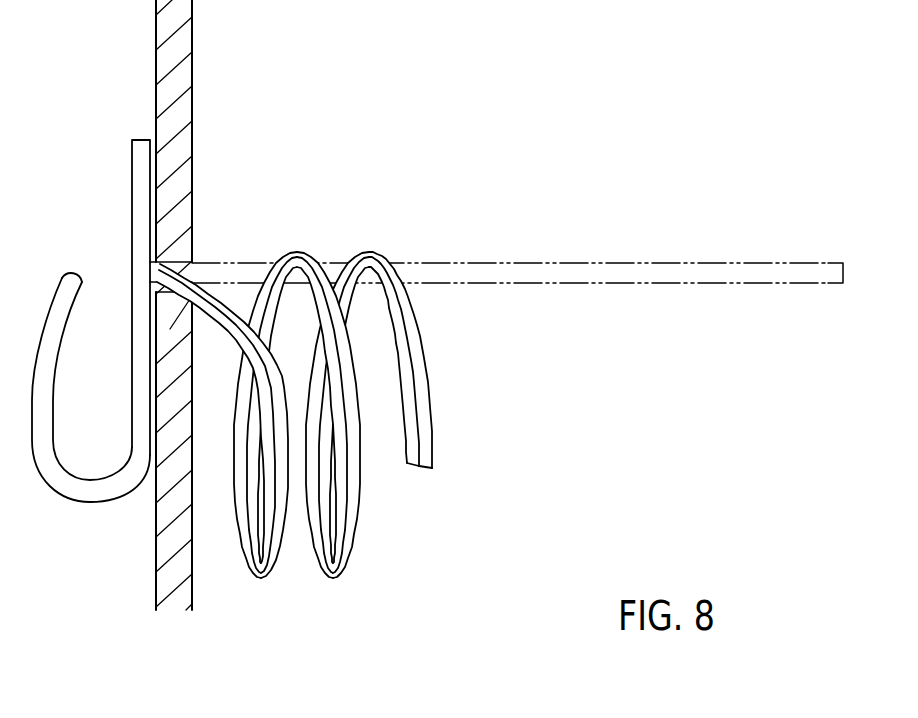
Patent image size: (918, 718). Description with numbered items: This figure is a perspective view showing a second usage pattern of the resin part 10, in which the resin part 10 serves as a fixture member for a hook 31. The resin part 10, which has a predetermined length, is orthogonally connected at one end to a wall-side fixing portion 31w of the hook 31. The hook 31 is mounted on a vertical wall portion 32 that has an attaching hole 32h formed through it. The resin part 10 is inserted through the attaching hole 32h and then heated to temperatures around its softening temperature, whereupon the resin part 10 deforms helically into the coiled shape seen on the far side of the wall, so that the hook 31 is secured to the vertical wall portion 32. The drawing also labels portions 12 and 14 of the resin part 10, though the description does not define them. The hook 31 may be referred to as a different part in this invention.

The resin part 10 is at (500, 379).
The core wire 12 is at (410, 405).
The outer coating layer 14 is at (418, 345).
The hook 31 is at (91, 319).
The wall-side fixing portion 31w is at (140, 173).
The vertical wall portion 32 is at (186, 78).
The attaching hole 32h is at (200, 265).